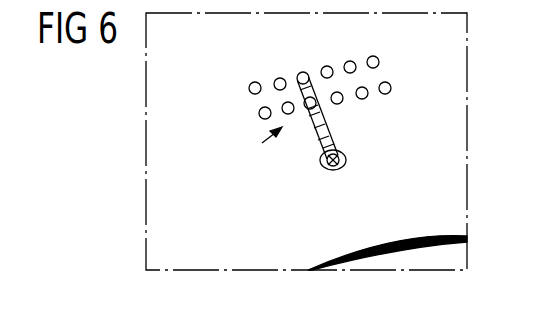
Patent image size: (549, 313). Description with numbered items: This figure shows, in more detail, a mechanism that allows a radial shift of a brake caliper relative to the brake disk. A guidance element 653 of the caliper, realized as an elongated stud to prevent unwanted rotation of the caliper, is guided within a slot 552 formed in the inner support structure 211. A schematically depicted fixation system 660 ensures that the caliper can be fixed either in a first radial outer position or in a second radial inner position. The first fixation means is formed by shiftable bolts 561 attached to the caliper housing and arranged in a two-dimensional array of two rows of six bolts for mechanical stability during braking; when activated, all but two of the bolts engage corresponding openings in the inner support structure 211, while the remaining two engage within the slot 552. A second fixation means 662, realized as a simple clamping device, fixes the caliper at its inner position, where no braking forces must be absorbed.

The inner support structure 211 is at (208, 53).
The shiftable bolts 561 is at (390, 50).
The guidance element 653 is at (325, 118).
The second fixation means 662 is at (346, 165).
The slot 552 is at (318, 149).
The fixation system 660 is at (262, 143).